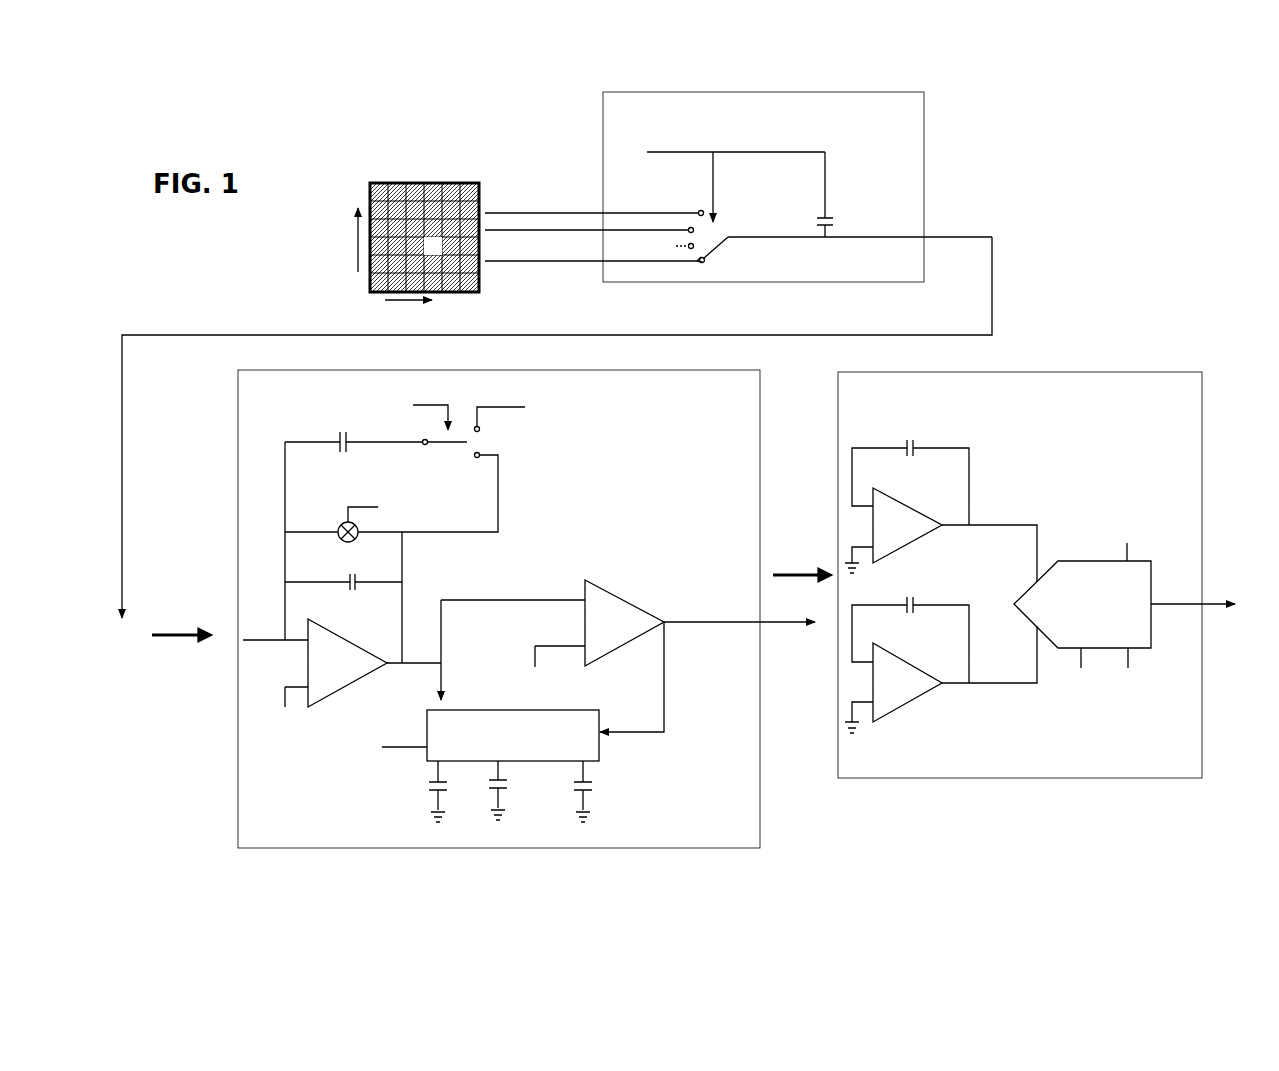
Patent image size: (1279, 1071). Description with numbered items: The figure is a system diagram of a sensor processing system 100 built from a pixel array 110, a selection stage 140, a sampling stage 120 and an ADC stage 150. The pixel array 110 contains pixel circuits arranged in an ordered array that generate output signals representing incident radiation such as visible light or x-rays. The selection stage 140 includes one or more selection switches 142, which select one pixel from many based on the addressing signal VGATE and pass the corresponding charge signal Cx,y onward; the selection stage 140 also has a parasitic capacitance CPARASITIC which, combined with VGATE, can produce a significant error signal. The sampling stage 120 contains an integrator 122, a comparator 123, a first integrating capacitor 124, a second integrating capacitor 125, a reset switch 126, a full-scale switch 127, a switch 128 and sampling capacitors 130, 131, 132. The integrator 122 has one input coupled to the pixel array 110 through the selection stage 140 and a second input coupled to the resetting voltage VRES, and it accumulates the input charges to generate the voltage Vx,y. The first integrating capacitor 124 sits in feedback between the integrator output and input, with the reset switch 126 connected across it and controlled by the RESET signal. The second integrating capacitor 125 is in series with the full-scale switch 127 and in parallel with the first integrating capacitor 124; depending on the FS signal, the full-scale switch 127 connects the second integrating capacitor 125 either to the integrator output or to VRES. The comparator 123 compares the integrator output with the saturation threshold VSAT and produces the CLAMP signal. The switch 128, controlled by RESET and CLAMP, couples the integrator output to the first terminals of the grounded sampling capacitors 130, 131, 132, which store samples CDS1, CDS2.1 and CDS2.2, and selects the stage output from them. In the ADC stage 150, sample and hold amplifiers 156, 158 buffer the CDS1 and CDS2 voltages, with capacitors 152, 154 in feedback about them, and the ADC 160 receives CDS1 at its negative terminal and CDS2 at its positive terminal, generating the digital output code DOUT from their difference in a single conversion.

The sensor processing system 100 is at (681, 470).
The pixel array 110 is at (523, 214).
The sampling stage 120 is at (526, 609).
The integrator 122 is at (341, 673).
The comparator 123 is at (667, 656).
The first integrating capacitor 124 is at (343, 589).
The second integrating capacitor 125 is at (376, 448).
The reset switch 126 is at (343, 525).
The full-scale (FS) switch 127 is at (479, 466).
The switch 128 is at (460, 735).
The sampling capacitor 130 is at (454, 791).
The sampling capacitor 131 is at (519, 790).
The sampling capacitor 132 is at (604, 791).
The selection stage 140 is at (797, 187).
The selection switch 142 is at (841, 242).
The ADC stage 150 is at (1039, 575).
The capacitor 152 is at (912, 625).
The capacitor 154 is at (912, 468).
The sample and hold amplifier 156 is at (941, 653).
The sample and hold amplifier 158 is at (941, 497).
The ADC 160 is at (1127, 608).